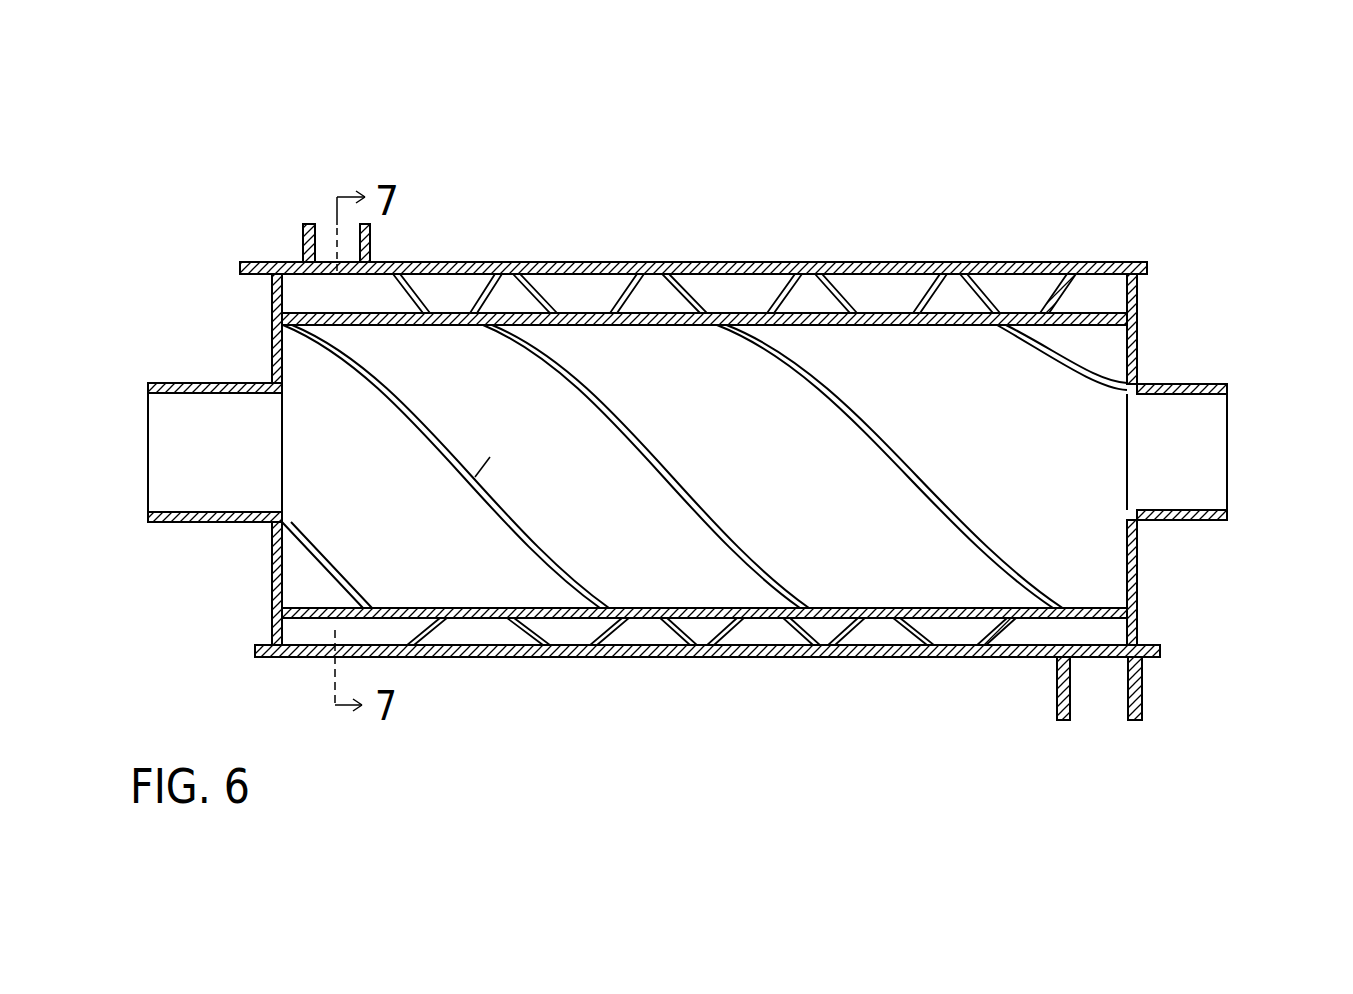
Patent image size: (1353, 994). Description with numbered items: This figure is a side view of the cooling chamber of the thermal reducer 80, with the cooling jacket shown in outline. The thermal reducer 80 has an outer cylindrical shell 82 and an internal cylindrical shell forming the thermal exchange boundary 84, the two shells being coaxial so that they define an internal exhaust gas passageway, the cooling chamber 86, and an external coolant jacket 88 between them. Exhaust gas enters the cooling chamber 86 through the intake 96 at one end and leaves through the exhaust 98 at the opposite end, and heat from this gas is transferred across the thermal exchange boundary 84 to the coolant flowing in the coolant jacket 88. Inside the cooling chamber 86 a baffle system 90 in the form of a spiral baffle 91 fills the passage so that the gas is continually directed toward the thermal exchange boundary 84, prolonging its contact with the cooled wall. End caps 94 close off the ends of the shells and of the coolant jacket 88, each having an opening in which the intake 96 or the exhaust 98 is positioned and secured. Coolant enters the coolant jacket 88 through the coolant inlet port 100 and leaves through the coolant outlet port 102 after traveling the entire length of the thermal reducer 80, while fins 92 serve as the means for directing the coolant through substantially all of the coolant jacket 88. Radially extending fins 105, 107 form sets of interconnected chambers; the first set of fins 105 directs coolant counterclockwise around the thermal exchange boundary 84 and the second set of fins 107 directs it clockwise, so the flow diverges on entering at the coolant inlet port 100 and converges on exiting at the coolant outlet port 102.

The thermal reducer 80 is at (585, 245).
The outer cylindrical shell 82 is at (737, 263).
The thermal exchange boundary 84 is at (853, 307).
The cooling chamber 86 is at (380, 508).
The coolant jacket 88 is at (453, 300).
The baffle system 90 is at (682, 457).
The spiral baffle 91 is at (502, 449).
The fins 92 is at (550, 293).
The end caps 94 is at (272, 350).
The intake 96 is at (193, 523).
The exhaust 98 is at (1163, 383).
The coolant inlet port 100 is at (303, 243).
The coolant outlet port 102 is at (1148, 673).
The first set of fins 105 is at (1010, 265).
The second set of fins 107 is at (1057, 265).